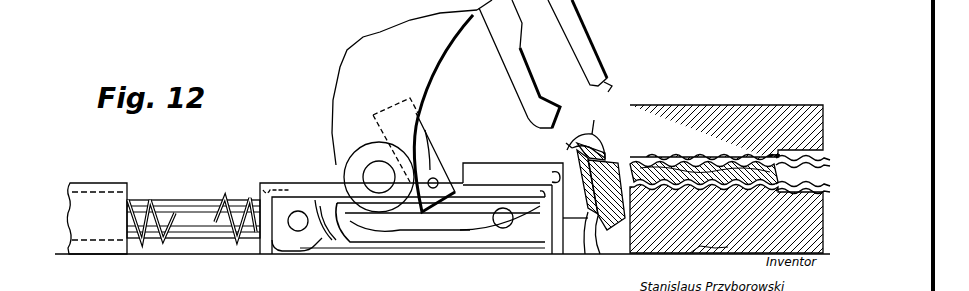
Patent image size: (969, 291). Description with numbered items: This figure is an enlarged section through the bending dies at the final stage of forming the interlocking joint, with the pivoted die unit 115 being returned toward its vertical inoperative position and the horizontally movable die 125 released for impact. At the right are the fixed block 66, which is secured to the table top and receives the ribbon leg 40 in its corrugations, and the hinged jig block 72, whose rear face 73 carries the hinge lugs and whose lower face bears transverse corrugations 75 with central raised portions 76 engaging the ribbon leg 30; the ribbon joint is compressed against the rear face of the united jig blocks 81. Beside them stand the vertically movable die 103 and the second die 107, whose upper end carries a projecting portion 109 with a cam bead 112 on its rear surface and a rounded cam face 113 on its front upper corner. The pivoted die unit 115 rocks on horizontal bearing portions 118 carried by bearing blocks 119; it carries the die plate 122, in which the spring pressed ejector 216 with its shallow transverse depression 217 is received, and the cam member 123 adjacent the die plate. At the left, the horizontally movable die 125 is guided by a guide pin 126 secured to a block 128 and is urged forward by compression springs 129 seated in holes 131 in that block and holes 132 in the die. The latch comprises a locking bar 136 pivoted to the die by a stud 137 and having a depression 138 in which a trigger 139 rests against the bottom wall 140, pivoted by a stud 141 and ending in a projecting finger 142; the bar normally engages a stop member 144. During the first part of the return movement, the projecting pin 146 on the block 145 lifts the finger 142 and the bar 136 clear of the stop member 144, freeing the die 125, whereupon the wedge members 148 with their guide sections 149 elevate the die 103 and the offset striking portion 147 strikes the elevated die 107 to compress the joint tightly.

The bearing block 119 is at (152, 3).
The pivoted die unit 115 is at (340, 68).
The horizontal bearing portion 118 is at (346, 168).
The die plate 122 is at (594, 38).
The cam member 123 is at (500, 66).
The spring pressed ejector 216 is at (612, 83).
The rounded cam face 113 is at (572, 135).
The shallow transverse depression 217 is at (594, 120).
The projecting portion 109 is at (592, 145).
The cam bead 112 is at (566, 143).
The rear face 73 is at (631, 110).
The central raised portion 76 is at (655, 160).
The jig block 81 is at (735, 172).
The hinged jig block 72 is at (763, 104).
The transverse corrugation 75 is at (820, 136).
The ribbon leg 30 is at (828, 166).
The ribbon leg 40 is at (828, 186).
The block 66 is at (636, 246).
The guide section 149 is at (708, 246).
The vertically movable die 103 is at (612, 240).
The second die 107 is at (575, 248).
The wedge member 148 is at (580, 246).
The block 145 is at (428, 120).
The projecting pin 146 is at (431, 132).
The projecting finger 142 is at (470, 185).
The offset striking portion 147 is at (520, 170).
The horizontally movable die 125 is at (518, 172).
The hole 132 is at (268, 188).
The block 128 is at (118, 170).
The compression spring 129 is at (153, 200).
The guide pin 126 is at (188, 200).
The hole 131 is at (100, 242).
The stud 137 is at (298, 231).
The locking bar 136 is at (320, 250).
The depression 138 is at (331, 228).
The trigger 139 is at (410, 230).
The bottom wall 140 is at (390, 230).
The stud 141 is at (494, 225).
The stop member 144 is at (471, 250).